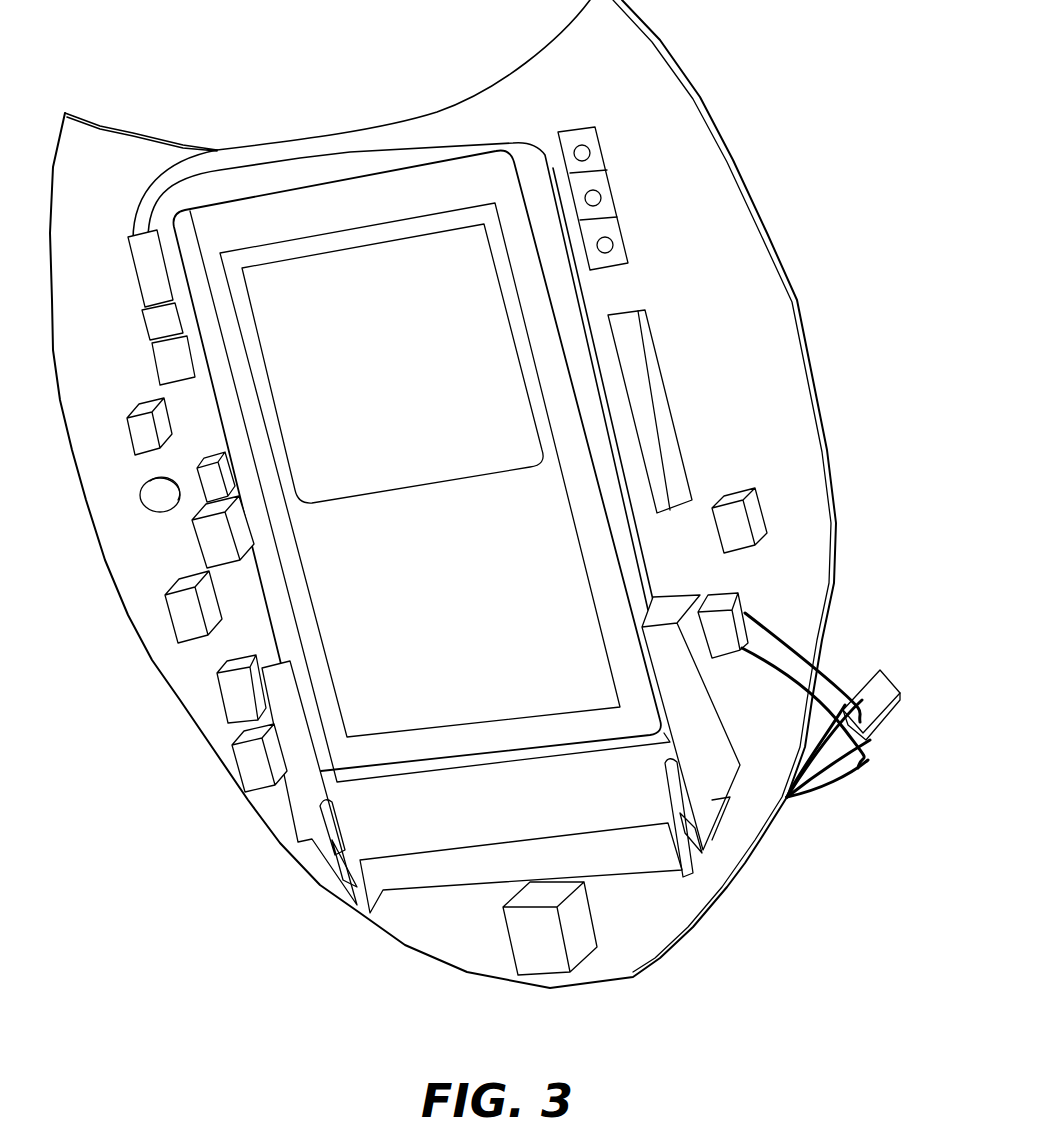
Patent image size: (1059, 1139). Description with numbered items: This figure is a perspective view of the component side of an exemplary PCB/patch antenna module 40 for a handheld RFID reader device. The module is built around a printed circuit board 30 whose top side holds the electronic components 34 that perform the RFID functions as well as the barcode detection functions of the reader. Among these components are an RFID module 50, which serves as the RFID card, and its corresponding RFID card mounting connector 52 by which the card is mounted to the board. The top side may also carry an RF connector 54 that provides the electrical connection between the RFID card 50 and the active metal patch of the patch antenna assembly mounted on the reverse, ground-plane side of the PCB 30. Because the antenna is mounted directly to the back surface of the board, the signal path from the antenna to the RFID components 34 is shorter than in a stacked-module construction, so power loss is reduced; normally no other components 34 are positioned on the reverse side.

The printed circuit board 30 is at (650, 36).
The electronic components 34 is at (640, 372).
The PCB/patch antenna module 40 is at (444, 467).
The RFID module 50 is at (407, 617).
The RFID card mounting connector 52 is at (450, 832).
The RF connector 54 is at (307, 148).